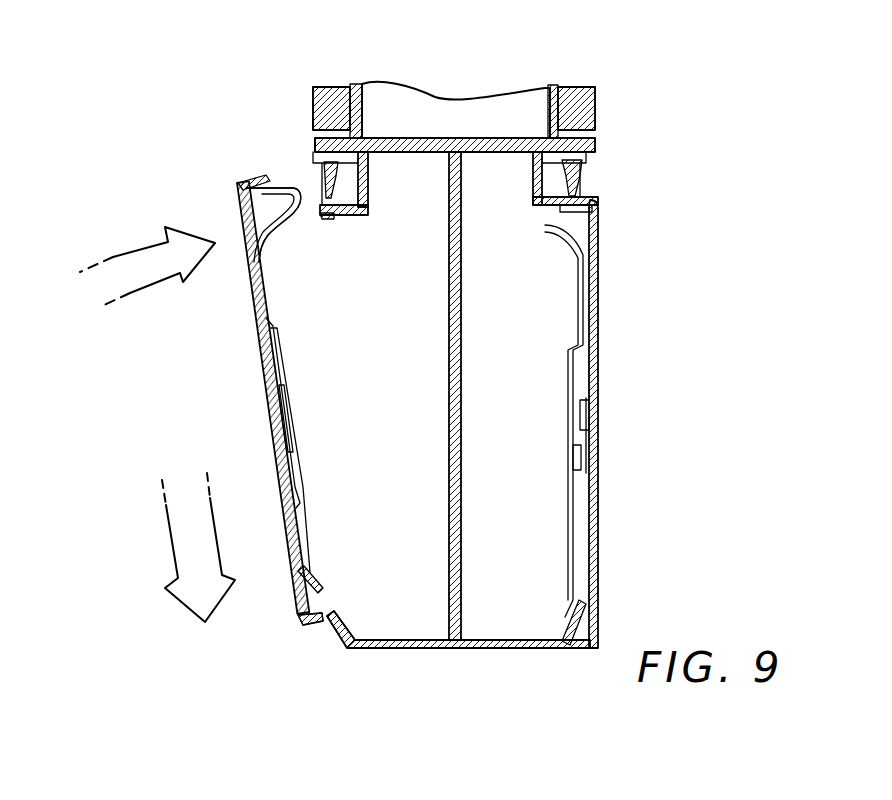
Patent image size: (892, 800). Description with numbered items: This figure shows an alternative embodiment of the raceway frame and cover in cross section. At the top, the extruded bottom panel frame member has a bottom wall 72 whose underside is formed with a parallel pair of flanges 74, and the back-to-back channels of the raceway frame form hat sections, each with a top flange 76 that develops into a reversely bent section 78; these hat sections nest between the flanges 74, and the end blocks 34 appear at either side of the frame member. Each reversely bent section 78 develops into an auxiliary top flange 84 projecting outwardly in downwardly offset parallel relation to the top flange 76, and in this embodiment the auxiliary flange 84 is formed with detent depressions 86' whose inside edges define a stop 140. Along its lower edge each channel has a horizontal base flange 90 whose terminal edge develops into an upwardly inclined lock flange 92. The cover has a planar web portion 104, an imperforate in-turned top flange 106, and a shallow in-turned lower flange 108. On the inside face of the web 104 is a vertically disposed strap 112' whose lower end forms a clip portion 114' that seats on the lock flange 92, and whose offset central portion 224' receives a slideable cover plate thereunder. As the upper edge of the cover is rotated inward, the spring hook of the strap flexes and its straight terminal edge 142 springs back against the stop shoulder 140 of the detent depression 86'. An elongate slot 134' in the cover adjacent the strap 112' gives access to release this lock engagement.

The top cap end block 34 is at (588, 112).
The bottom wall 72 is at (413, 138).
The flanges 74 is at (324, 158).
The top flange 76 is at (505, 152).
The reversely bent section 78 is at (376, 180).
The auxiliary top flange 84 is at (358, 222).
The detent depressions 86' is at (257, 195).
The horizontal base flange 90 is at (395, 640).
The lock flange 92 is at (328, 628).
The planar web portion 104 is at (600, 372).
The in-turned flange 106 is at (590, 203).
The shallow in-turned flange 108 is at (307, 626).
The strap 112' is at (295, 403).
The clip portion 114' is at (347, 566).
The openings 134' is at (208, 225).
The stop 140 is at (348, 238).
The straight edge 142 is at (243, 190).
The offset central portion 224' is at (323, 445).